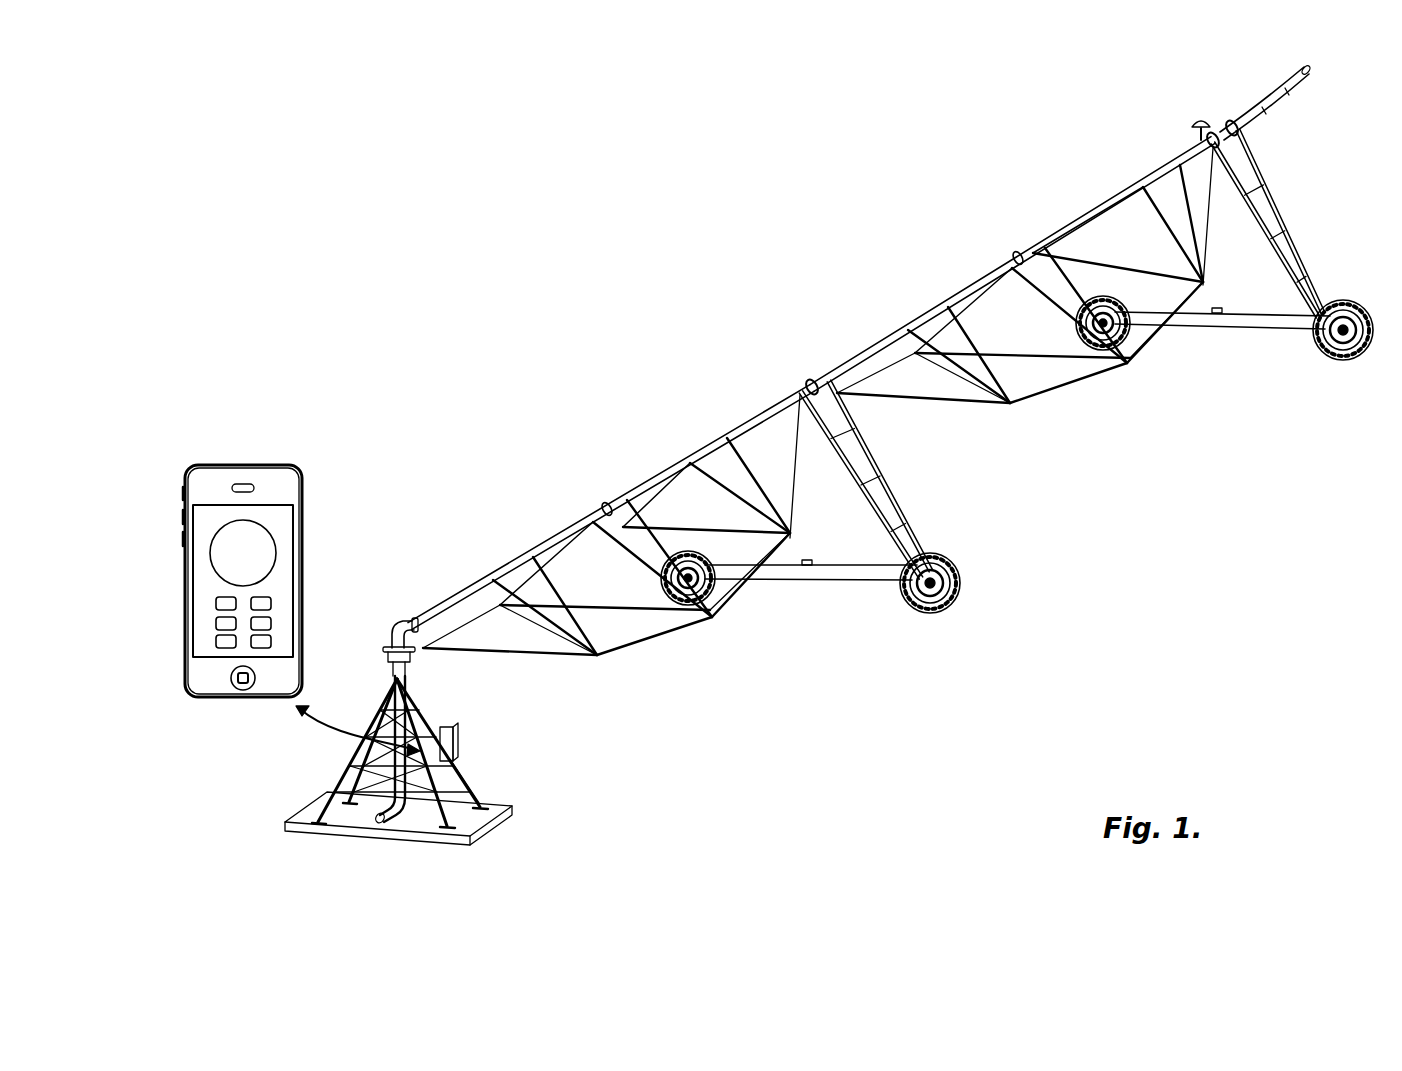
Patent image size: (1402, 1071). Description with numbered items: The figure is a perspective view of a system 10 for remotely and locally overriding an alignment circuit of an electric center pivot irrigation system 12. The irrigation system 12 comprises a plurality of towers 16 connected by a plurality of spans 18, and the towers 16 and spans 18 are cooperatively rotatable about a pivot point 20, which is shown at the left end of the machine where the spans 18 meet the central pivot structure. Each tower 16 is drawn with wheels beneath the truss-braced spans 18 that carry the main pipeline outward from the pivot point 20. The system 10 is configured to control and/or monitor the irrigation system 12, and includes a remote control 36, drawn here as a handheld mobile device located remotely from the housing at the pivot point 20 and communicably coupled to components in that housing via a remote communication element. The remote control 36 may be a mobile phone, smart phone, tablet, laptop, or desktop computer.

The system 10 is at (357, 596).
The electric center pivot irrigation system 12 is at (757, 378).
The towers 16 is at (880, 510).
The spans 18 is at (575, 526).
The pivot point 20 is at (402, 678).
The remote control 36 is at (222, 464).